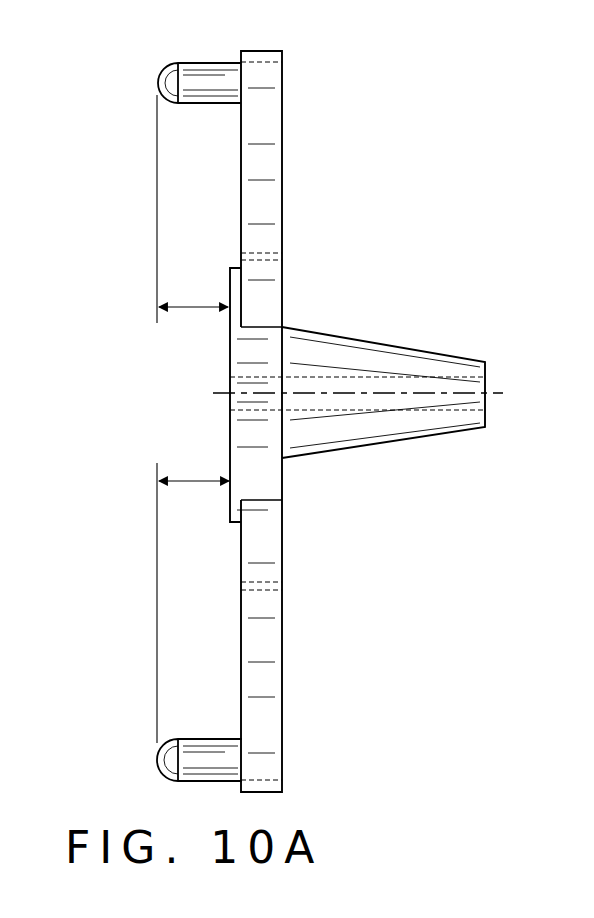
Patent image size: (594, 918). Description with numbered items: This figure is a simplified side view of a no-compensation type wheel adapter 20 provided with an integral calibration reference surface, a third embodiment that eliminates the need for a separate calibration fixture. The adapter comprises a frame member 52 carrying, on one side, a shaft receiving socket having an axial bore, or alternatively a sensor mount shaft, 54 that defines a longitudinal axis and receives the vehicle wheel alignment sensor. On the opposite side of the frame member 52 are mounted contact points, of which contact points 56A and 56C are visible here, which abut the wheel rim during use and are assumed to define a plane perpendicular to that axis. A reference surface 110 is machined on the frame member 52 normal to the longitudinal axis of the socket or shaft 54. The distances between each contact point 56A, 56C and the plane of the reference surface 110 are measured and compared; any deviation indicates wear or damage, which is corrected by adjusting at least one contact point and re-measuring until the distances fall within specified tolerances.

The no-compensation type wheel adapter 20 is at (313, 408).
The frame member 52 is at (282, 485).
The shaft receiving socket or sensor mount shaft 54 is at (485, 403).
The reference surface 110 is at (229, 423).
The contact point 56A is at (158, 762).
The contact point 56C is at (158, 80).